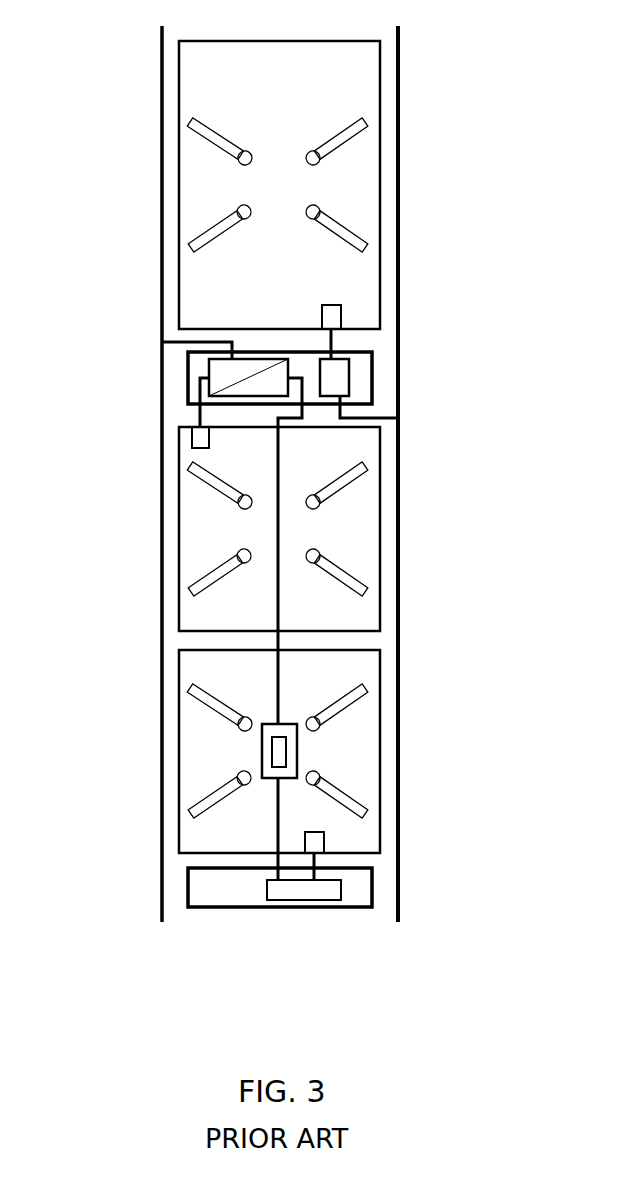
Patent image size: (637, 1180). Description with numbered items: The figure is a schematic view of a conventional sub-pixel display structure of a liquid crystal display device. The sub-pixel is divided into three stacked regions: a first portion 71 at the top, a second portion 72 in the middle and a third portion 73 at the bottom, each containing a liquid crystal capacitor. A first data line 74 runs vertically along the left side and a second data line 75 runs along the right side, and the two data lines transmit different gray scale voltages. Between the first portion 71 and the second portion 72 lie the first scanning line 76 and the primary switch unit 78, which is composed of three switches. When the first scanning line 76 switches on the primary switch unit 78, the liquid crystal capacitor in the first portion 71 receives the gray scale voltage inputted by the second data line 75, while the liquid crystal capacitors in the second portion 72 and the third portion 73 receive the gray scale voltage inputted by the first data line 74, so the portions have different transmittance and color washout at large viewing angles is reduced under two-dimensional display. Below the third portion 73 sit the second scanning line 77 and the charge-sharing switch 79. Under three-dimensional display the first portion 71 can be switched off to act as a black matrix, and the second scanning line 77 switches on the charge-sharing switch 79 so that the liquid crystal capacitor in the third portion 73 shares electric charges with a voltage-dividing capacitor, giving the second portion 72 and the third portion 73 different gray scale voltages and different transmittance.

The first portion 71 is at (381, 161).
The second portion 72 is at (381, 530).
The third portion 73 is at (381, 740).
The first data line 74 is at (160, 262).
The second data line 75 is at (400, 322).
The first scanning line 76 is at (373, 377).
The second scanning line 77 is at (373, 872).
The primary switch unit 78 is at (194, 362).
The charge-sharing switch 79 is at (345, 890).